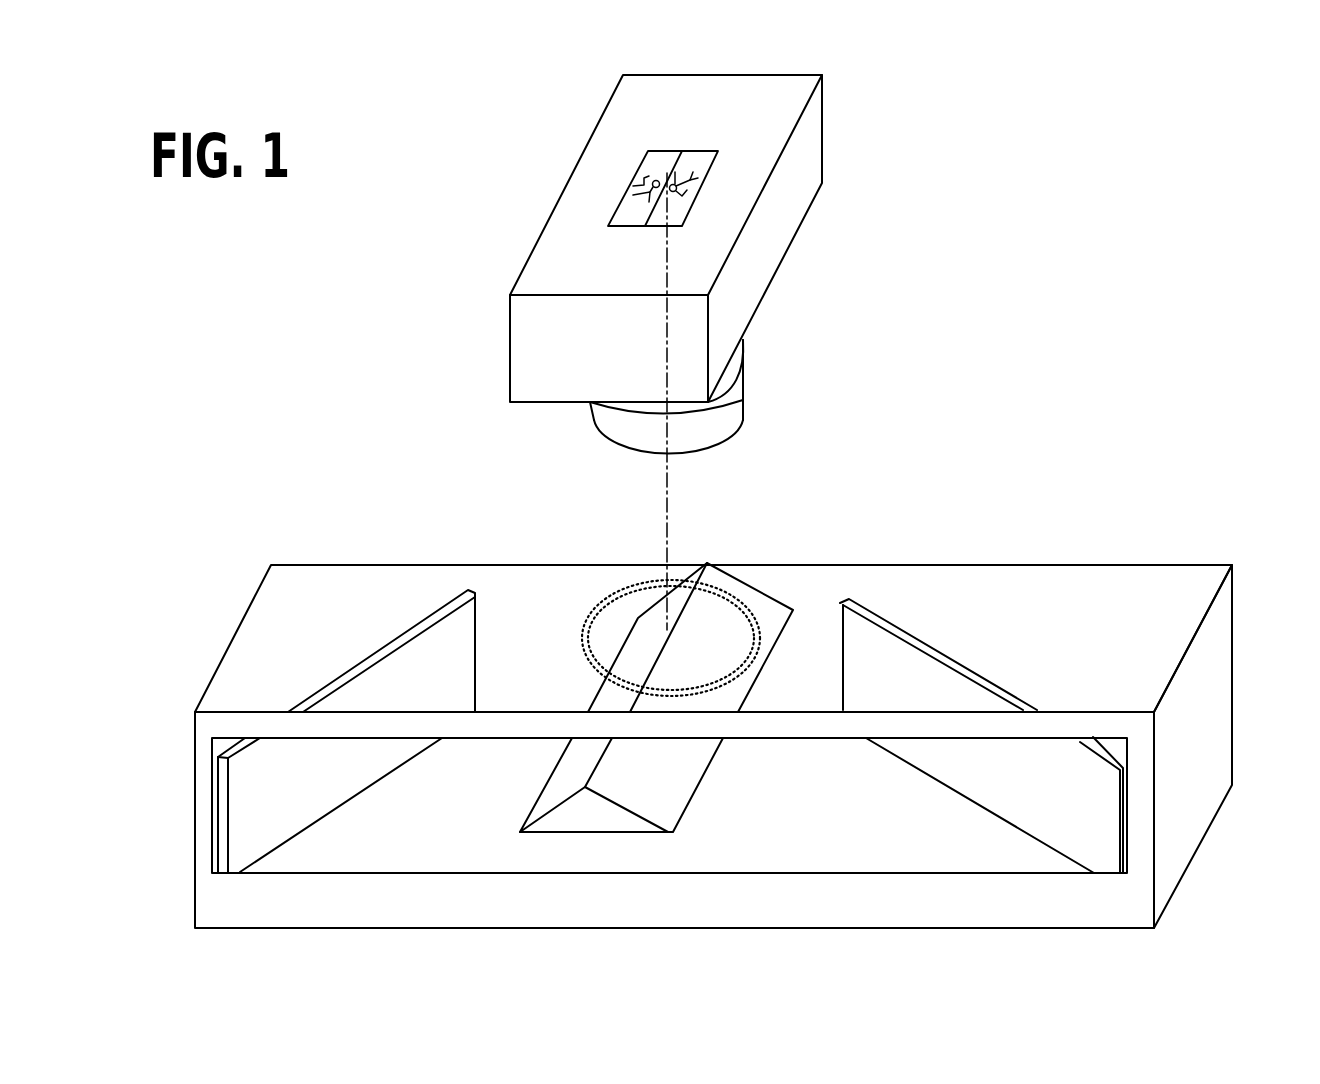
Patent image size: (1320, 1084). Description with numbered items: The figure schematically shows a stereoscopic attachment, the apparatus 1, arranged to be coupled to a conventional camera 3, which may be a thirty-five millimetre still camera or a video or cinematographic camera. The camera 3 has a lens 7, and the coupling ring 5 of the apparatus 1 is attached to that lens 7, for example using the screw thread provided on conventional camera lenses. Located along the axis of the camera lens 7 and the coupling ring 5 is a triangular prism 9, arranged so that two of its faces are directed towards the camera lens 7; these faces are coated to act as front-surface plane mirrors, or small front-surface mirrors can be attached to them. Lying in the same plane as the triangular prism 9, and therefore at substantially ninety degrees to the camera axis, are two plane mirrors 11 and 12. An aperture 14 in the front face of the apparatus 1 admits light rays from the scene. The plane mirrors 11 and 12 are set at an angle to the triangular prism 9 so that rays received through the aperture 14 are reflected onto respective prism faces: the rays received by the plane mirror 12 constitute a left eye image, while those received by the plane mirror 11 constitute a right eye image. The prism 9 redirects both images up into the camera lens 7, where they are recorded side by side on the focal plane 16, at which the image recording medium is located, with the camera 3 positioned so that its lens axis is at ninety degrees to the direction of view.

The apparatus 1 is at (1112, 587).
The camera 3 is at (807, 145).
The coupling ring 5 is at (610, 587).
The lens 7 is at (722, 420).
The triangular prism 9 is at (682, 758).
The plane mirror 11 is at (435, 659).
The plane mirror 12 is at (904, 665).
The aperture 14 is at (322, 847).
The focal plane 16 is at (635, 230).